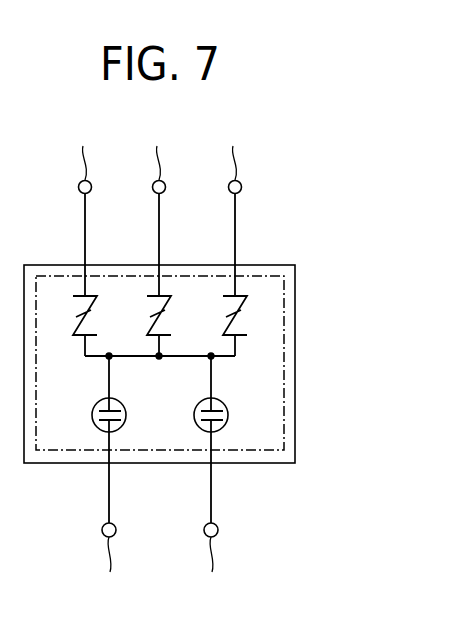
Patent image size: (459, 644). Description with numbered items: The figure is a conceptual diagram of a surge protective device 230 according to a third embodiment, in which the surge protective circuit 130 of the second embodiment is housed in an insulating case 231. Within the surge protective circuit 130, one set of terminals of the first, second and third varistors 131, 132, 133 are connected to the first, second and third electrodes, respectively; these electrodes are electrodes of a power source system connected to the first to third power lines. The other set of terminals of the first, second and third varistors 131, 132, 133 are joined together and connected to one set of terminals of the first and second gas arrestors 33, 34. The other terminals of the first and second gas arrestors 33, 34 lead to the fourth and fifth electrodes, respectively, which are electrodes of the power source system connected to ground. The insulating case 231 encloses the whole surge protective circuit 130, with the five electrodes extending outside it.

The surge protective device 230 is at (336, 165).
The insulating case 231 is at (295, 392).
The surge protective circuit 130 is at (284, 344).
The first varistor 131 is at (80, 293).
The second varistor 132 is at (155, 293).
The third varistor 133 is at (230, 293).
The first gas arrestor 33 is at (128, 412).
The second gas arrestor 34 is at (231, 412).